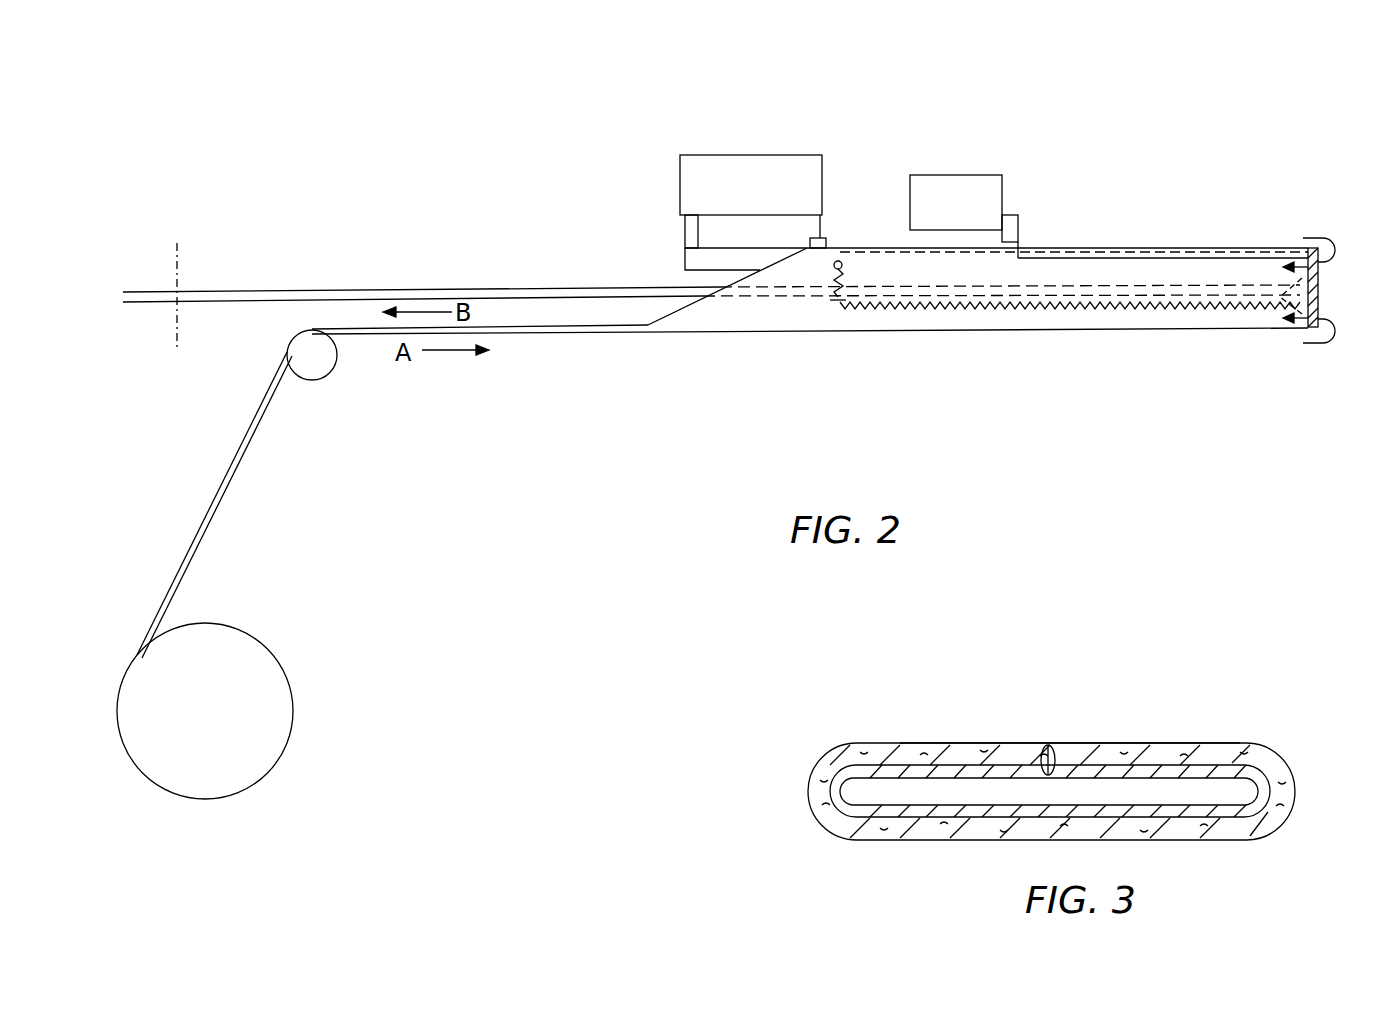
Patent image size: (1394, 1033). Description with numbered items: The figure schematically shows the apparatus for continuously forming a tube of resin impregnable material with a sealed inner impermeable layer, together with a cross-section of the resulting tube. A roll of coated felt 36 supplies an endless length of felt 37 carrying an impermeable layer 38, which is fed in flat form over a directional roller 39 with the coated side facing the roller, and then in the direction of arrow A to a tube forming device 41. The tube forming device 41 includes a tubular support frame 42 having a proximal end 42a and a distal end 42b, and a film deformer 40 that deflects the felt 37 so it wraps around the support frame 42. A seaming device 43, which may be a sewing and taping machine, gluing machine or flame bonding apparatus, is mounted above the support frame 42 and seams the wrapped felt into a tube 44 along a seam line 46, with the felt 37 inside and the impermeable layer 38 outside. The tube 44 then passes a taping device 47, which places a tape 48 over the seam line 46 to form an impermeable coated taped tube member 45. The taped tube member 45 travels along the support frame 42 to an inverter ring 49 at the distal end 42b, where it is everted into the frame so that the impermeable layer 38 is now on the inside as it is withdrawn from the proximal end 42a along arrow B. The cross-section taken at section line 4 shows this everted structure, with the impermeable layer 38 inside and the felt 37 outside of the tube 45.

In FIG. 2, the section line 4- 4 is at (165, 260).
In FIG. 2, the roll of coated felt 36 is at (282, 690).
In FIG. 2, the felt 37 is at (193, 531).
In FIG. 3, the felt 37 is at (1278, 765).
In FIG. 2, the impermeable layer 38 is at (228, 483).
In FIG. 3, the impermeable layer 38 is at (1147, 780).
In FIG. 2, the directional roller 39 is at (326, 369).
In FIG. 2, the film deformer 40 is at (682, 313).
In FIG. 2, the tube forming device 41 is at (1043, 189).
In FIG. 2, the tubular support frame 42 is at (890, 310).
In FIG. 2, the proximal end 42a is at (838, 302).
In FIG. 2, the distal end 42b is at (1313, 303).
In FIG. 2, the seaming device 43 is at (700, 155).
In FIG. 2, the tube 44 is at (545, 293).
In FIG. 2, the impermeable coated taped tube member 45 is at (222, 284).
In FIG. 3, the impermeable coated taped tube member 45 is at (967, 743).
In FIG. 2, the seam line 46 is at (853, 250).
In FIG. 3, the seam line 46 is at (1040, 745).
In FIG. 2, the taping device 47 is at (972, 175).
In FIG. 2, the tape 48 is at (1212, 247).
In FIG. 3, the tape 48 is at (1112, 788).
In FIG. 2, the inverter ring 49 is at (1320, 283).